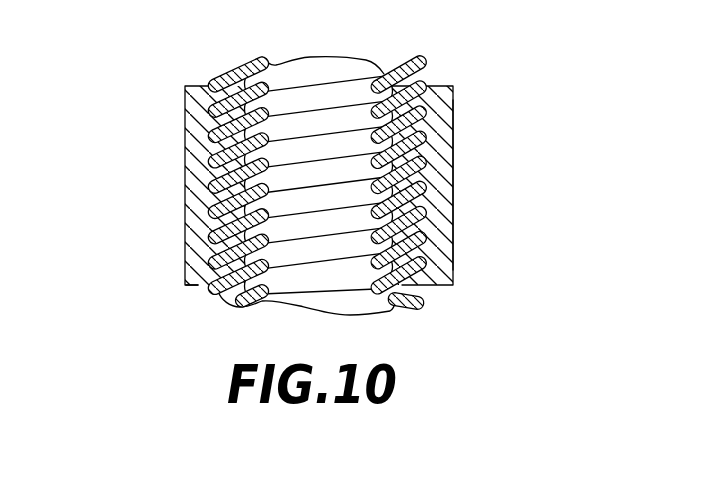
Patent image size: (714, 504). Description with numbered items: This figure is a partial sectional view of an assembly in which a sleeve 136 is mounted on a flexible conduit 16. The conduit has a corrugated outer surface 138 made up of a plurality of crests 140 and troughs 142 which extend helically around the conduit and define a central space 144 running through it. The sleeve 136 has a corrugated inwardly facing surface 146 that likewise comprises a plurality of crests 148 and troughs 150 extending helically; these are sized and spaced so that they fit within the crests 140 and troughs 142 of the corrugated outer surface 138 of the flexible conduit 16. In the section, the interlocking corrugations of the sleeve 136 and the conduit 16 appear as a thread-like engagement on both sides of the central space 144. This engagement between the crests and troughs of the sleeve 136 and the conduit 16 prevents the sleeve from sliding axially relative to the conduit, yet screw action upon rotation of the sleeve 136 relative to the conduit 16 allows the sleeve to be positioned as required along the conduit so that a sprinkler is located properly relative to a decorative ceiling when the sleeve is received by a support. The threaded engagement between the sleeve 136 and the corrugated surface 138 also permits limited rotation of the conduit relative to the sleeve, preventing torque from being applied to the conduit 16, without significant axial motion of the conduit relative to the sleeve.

The flexible conduit 16 is at (217, 73).
The sleeve 136 is at (454, 247).
The corrugated outer surface 138 is at (204, 284).
The crests 140 is at (185, 122).
The troughs 142 is at (186, 160).
The central space 144 is at (320, 70).
The corrugated inwardly facing surface 146 is at (455, 100).
The crests 148 is at (217, 200).
The troughs 150 is at (222, 207).